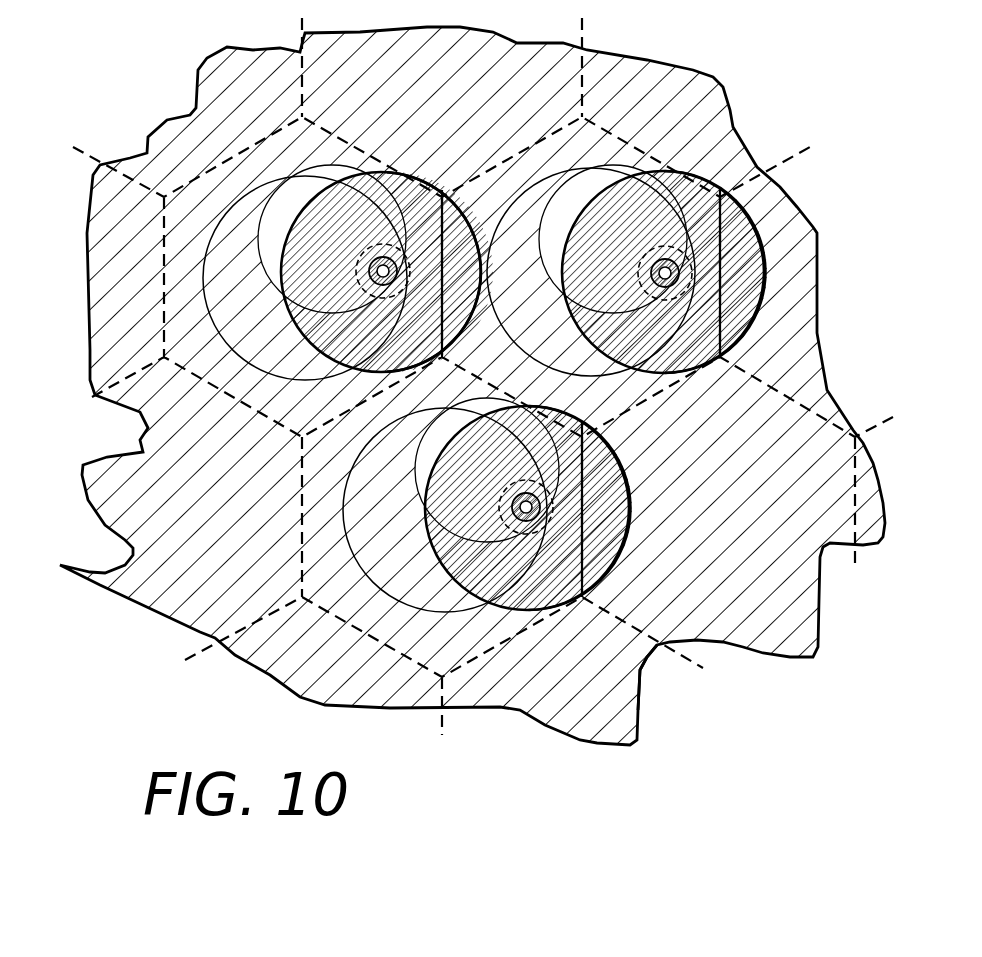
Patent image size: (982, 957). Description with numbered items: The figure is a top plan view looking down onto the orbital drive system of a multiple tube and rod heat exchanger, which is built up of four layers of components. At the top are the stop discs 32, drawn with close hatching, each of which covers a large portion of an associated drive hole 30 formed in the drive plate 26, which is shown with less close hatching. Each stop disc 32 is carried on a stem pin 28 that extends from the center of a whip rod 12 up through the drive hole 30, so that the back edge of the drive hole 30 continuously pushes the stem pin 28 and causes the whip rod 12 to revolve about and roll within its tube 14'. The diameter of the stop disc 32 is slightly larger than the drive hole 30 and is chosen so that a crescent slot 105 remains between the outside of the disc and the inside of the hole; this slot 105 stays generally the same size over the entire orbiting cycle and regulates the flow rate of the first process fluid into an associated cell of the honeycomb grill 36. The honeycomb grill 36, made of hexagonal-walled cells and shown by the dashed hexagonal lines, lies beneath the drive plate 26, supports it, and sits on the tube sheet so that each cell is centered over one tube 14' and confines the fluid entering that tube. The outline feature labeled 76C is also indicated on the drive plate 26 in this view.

The drive plate 26 is at (717, 630).
The drive hole 30 is at (500, 396).
The crescent slot 105 is at (433, 450).
The stop disc 32 is at (632, 500).
The tube 14' is at (367, 390).
The stem pin 28 is at (527, 533).
The whip rod 12 is at (512, 537).
The honeycomb grill 36 is at (275, 672).
The notch 76C is at (640, 670).